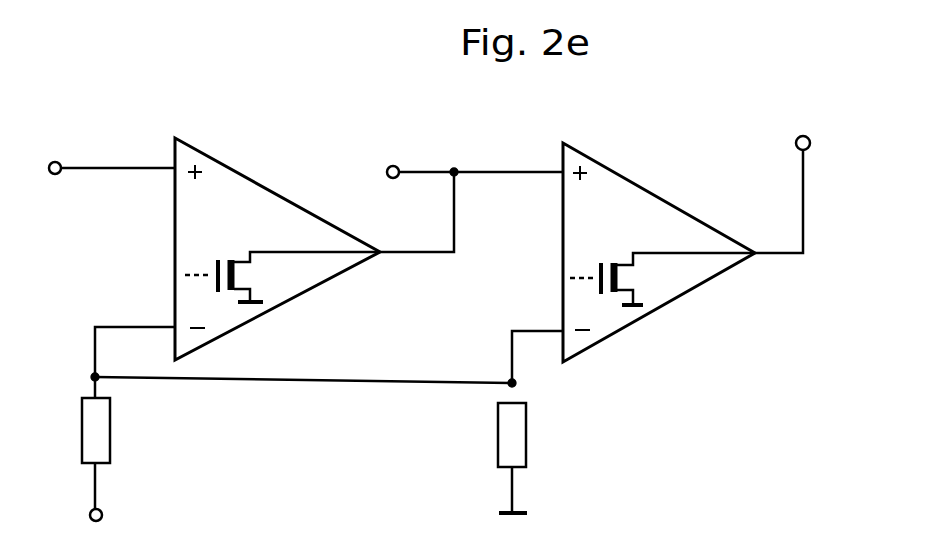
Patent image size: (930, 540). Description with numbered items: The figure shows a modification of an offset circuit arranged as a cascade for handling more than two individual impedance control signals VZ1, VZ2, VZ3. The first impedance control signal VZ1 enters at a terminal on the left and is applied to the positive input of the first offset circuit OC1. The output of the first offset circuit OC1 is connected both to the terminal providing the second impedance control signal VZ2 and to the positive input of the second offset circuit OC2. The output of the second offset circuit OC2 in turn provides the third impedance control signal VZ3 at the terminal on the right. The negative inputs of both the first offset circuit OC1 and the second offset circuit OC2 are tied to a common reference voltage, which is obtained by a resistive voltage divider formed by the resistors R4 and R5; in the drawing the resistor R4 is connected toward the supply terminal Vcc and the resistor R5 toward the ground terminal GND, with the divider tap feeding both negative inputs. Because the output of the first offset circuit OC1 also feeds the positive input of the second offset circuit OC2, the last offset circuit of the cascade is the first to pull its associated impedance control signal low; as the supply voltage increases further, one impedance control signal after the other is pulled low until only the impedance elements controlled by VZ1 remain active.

The first offset circuit OC1 is at (280, 195).
The second offset circuit OC2 is at (675, 206).
The first impedance control signal VZ1 is at (55, 161).
The second impedance control signal VZ2 is at (393, 165).
The third impedance control signal VZ3 is at (810, 141).
The resistor R4 is at (111, 428).
The resistor R5 is at (527, 434).
The supply voltage terminal Vcc is at (118, 516).
The ground terminal GND is at (536, 509).